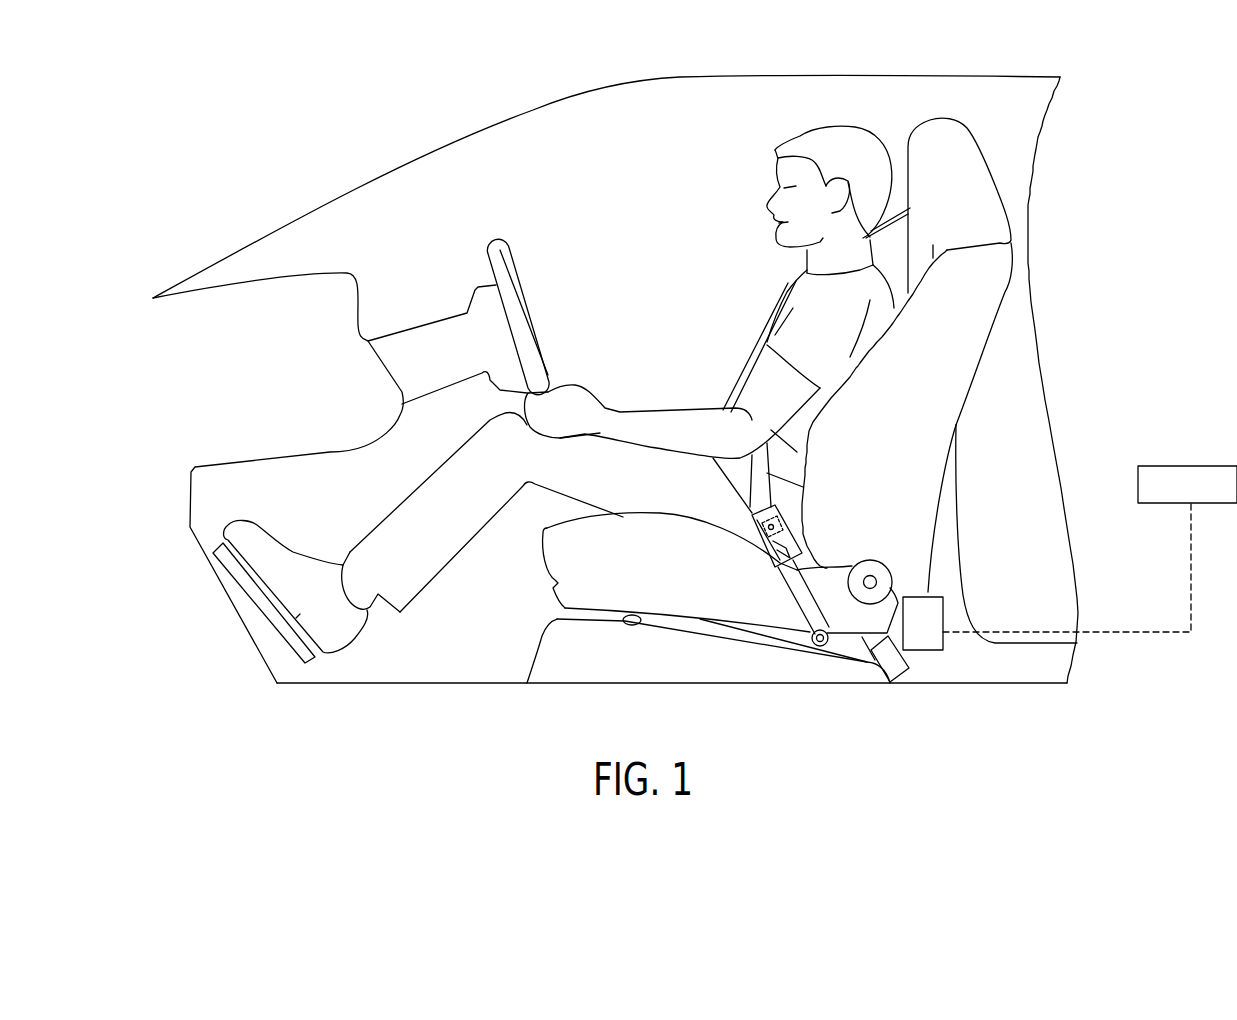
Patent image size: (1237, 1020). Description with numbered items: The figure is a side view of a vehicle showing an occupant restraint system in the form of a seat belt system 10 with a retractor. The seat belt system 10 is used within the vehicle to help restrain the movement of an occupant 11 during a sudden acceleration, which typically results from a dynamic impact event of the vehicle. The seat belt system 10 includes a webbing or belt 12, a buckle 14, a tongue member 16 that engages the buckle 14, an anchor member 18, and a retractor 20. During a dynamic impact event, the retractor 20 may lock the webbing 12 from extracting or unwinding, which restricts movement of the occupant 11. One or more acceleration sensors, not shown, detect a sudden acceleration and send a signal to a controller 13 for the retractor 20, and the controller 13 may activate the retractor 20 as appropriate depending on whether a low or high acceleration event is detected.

The seat belt system 10 is at (245, 150).
The occupant 11 is at (683, 423).
The webbing 12 is at (927, 588).
The controller 13 is at (1090, 549).
The buckle 14 is at (767, 550).
The tongue member 16 is at (752, 523).
The anchor member 18 is at (898, 668).
The retractor 20 is at (930, 628).